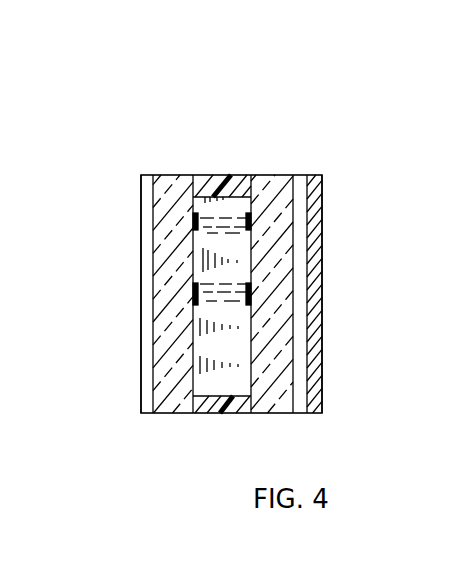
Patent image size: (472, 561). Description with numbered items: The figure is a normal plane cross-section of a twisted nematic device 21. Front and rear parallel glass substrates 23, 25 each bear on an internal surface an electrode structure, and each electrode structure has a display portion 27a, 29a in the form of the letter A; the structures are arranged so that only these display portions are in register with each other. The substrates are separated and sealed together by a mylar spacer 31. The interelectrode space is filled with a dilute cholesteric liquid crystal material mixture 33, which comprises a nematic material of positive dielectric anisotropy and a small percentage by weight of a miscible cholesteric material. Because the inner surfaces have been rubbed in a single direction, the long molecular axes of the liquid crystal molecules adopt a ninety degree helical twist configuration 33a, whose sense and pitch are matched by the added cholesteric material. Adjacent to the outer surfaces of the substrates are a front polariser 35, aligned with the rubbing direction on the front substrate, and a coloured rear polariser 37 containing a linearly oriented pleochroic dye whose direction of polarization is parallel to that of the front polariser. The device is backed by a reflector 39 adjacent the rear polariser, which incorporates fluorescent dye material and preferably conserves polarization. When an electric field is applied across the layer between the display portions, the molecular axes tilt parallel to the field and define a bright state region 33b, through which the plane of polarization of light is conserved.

The twisted nematic device 21 is at (323, 414).
The front glass substrate 23 is at (158, 372).
The rear glass substrate 25 is at (266, 410).
The display portion of electrode structure 27a is at (193, 228).
The display portion of electrode structure 29a is at (253, 228).
The mylar spacer 31 is at (230, 400).
The dilute cholesteric liquid crystal material mixture 33 is at (208, 380).
The helical twist configuration 33a is at (190, 376).
The bright state region 33b is at (228, 222).
The front polariser 35 is at (147, 338).
The rear polariser 37 is at (297, 410).
The reflector 39 is at (315, 345).